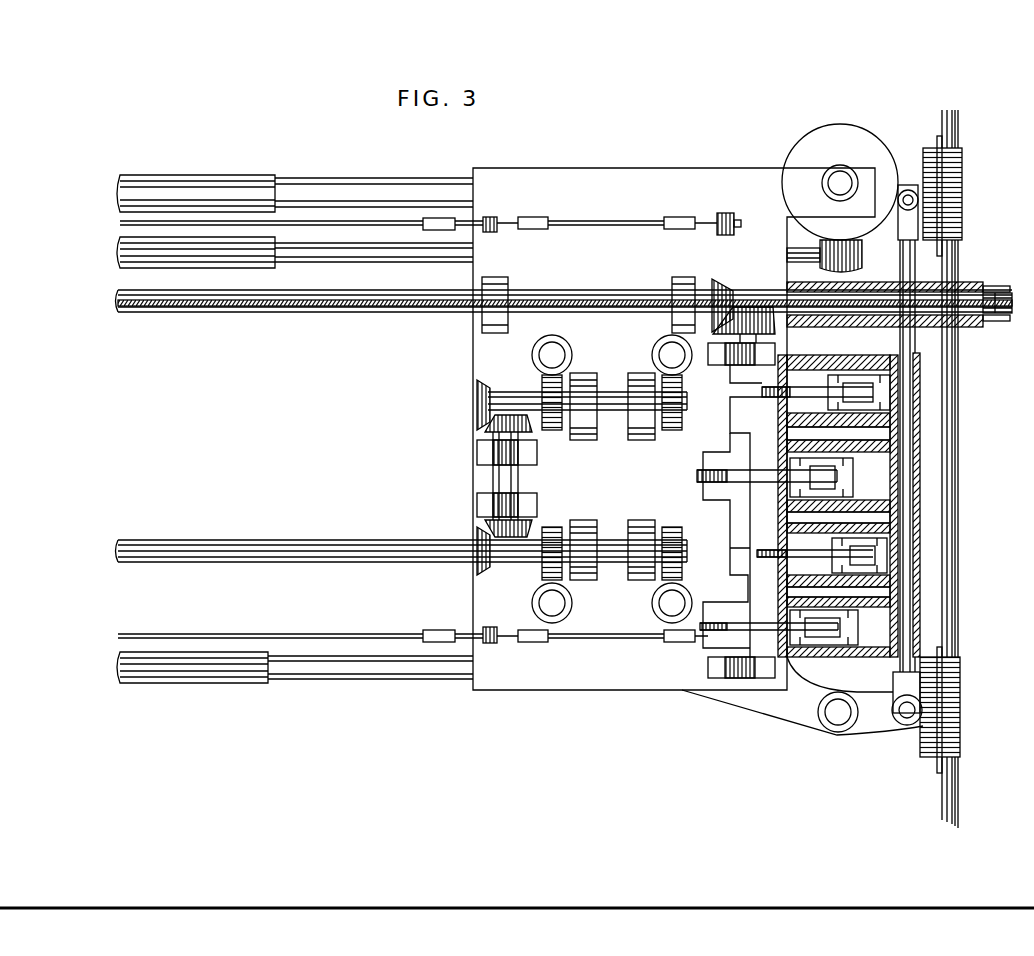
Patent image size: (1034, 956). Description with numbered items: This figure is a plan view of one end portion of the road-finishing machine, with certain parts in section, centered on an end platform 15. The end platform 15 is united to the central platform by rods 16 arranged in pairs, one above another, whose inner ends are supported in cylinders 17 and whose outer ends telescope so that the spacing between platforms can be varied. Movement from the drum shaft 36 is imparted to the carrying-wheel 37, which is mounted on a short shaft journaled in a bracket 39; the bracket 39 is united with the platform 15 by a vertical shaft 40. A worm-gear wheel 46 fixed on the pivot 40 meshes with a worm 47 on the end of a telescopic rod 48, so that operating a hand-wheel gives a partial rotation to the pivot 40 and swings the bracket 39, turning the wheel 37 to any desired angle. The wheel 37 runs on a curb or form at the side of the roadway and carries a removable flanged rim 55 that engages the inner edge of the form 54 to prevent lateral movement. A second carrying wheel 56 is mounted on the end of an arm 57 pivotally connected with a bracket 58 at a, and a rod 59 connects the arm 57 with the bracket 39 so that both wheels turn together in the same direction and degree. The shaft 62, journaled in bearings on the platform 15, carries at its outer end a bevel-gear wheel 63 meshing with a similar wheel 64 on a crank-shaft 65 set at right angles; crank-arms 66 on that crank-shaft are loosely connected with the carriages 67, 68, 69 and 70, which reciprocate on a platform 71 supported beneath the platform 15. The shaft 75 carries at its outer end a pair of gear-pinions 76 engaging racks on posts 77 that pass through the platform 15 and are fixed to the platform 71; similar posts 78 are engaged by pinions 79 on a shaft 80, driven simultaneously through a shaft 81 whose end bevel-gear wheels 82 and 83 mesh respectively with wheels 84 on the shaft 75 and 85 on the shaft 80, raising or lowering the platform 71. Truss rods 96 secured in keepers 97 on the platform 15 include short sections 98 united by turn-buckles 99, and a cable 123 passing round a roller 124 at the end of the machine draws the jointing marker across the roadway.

The end platform 15 is at (688, 168).
The rod 16 is at (373, 250).
The cylinder 17 is at (130, 252).
The shaft 36 is at (213, 188).
The carrying wheel 37 is at (935, 150).
The bracket 39 is at (905, 185).
The vertical shaft 40 is at (845, 176).
The worm-gear wheel 46 is at (803, 150).
The worm 47 is at (848, 258).
The telescopic rod 48 is at (800, 250).
The form 54 is at (957, 510).
The flanged rim 55 is at (945, 135).
The carrying wheel 56 is at (940, 718).
The arm 57 is at (875, 718).
The bracket 58 is at (790, 712).
The pivotal connection a is at (835, 712).
The rod 59 is at (916, 440).
The shaft 62 is at (325, 312).
The bevel-gear wheel 63 is at (722, 286).
The bevel-gear wheel 64 is at (755, 320).
The crank-shaft 65 is at (743, 428).
The crank-arm 66 is at (778, 627).
The carriage 67 is at (850, 622).
The carriage 68 is at (885, 553).
The carriage 69 is at (880, 475).
The carriage 70 is at (897, 380).
The platform 71 is at (903, 462).
The shaft 75 is at (337, 553).
The gear-pinion 76 is at (549, 527).
The post 77 is at (553, 603).
The post 78 is at (672, 355).
The gear-pinion 79 is at (668, 425).
The shaft 80 is at (612, 408).
The shaft 81 is at (505, 480).
The bevel-gear wheel 82 is at (490, 524).
The bevel-gear wheel 83 is at (490, 425).
The bevel-gear wheel 84 is at (480, 575).
The bevel-gear wheel 85 is at (480, 395).
The rod 96 is at (330, 222).
The keeper 97 is at (724, 214).
The short section 98 is at (503, 218).
The turn-buckle 99 is at (540, 230).
The cable 123 is at (235, 313).
The roller 124 is at (1000, 300).